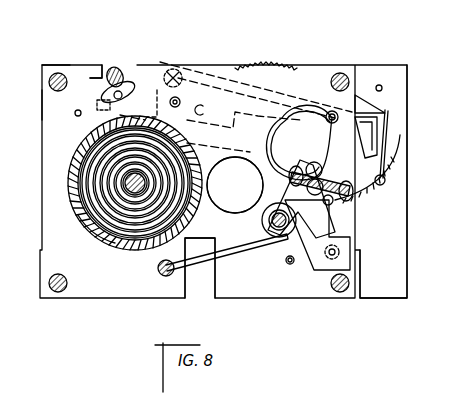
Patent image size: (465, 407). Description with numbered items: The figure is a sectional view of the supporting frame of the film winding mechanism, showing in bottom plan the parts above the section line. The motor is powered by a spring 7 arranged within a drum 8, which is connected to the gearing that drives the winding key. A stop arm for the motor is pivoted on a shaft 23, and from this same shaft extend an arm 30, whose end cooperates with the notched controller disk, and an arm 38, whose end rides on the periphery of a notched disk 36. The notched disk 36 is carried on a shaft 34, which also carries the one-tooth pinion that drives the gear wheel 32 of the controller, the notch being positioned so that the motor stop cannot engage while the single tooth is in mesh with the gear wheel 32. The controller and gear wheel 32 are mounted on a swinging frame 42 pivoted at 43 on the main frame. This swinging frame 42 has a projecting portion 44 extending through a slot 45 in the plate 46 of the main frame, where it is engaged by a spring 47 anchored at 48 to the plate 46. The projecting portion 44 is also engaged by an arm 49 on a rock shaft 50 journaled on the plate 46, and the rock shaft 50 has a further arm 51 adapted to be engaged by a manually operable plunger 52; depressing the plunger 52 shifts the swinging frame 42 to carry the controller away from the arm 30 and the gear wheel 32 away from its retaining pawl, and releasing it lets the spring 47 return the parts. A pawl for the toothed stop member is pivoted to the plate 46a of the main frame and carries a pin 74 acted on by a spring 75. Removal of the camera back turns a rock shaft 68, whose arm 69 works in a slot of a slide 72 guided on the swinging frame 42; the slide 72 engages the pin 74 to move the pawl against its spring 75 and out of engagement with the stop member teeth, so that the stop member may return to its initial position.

The spring 7 is at (90, 183).
The drum 8 is at (72, 213).
The shaft 23 is at (165, 283).
The arm 30 is at (212, 247).
The gear wheel 32 is at (266, 48).
The shaft 34 is at (272, 222).
The notched disk 36 is at (235, 185).
The arm 38 is at (203, 270).
The swinging frame 42 is at (200, 70).
The pivot 43 is at (172, 97).
The projecting portion 44 is at (235, 185).
The slot 45 is at (322, 158).
The plate 46 is at (89, 68).
The plate 46a is at (398, 182).
The spring 47 is at (302, 110).
The anchor 48 is at (331, 110).
The arm 49 is at (340, 218).
The rock shaft 50 is at (330, 202).
The arm 51 is at (344, 240).
The plunger 52 is at (338, 258).
The rock shaft 68 is at (114, 70).
The arm 69 is at (100, 97).
The slide 72 is at (90, 78).
The pin 74 is at (385, 115).
The spring 75 is at (380, 138).